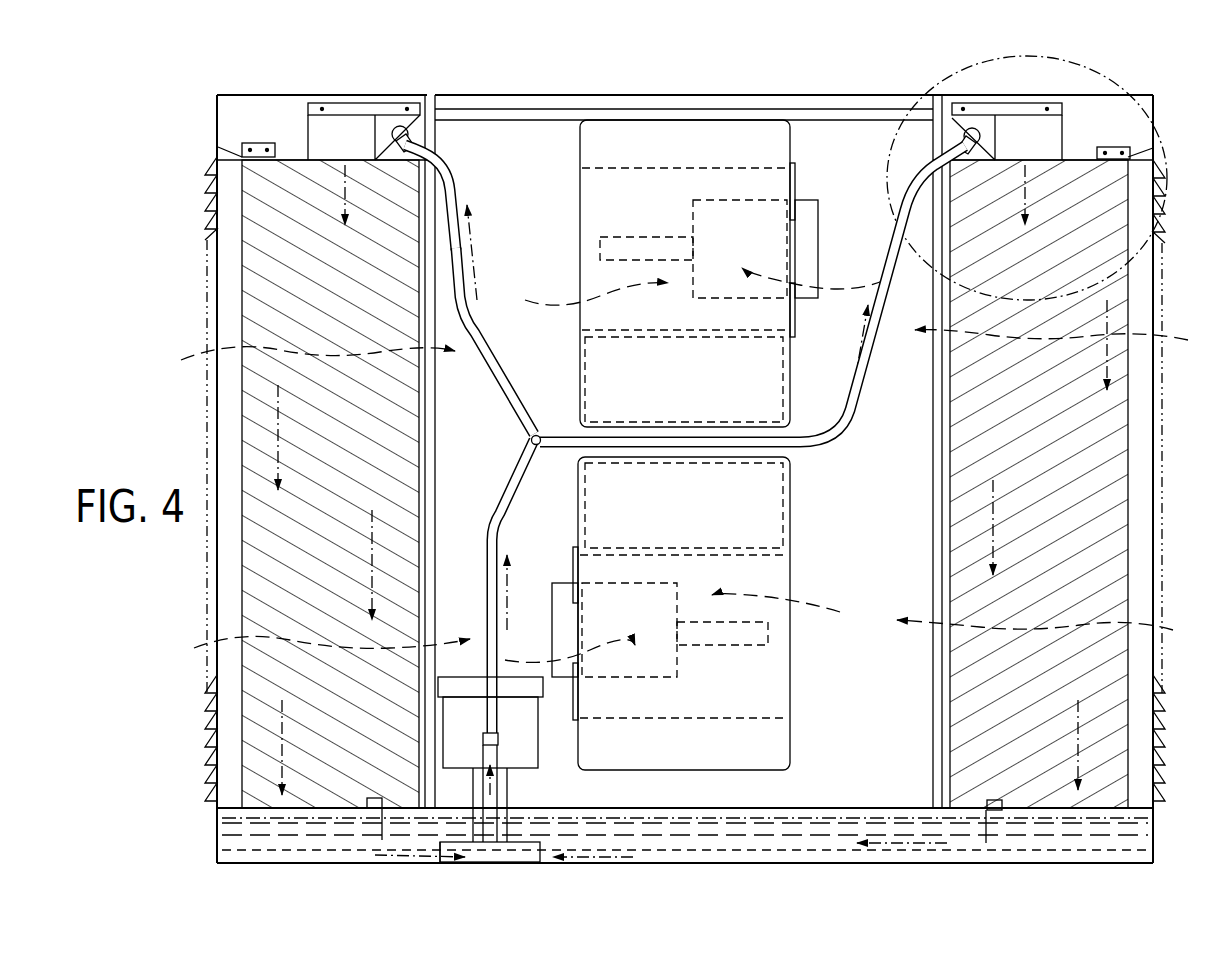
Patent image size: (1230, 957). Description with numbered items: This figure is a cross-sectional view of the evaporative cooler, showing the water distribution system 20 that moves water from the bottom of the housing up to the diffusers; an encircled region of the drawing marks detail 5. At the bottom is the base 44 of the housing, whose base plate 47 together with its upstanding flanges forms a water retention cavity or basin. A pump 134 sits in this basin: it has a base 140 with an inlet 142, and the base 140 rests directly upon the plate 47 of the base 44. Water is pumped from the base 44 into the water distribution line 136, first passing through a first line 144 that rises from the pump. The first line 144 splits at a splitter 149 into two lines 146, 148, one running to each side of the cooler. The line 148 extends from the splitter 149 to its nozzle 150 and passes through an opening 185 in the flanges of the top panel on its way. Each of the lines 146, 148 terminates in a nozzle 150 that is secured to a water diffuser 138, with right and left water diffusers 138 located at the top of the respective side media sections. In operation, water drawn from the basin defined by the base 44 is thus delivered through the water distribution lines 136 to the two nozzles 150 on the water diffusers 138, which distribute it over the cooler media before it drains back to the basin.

The detail region of FIG. 5 is at (1150, 68).
The water distribution system 20 is at (478, 873).
The base 44 is at (870, 872).
The base plate 47 is at (688, 866).
The pump 134 is at (535, 766).
The water distribution line 136 is at (508, 582).
The water diffuser 138 is at (346, 125).
The base 140 is at (530, 858).
The inlet 142 is at (440, 855).
The first line 144 is at (498, 525).
The line 146 is at (512, 335).
The line 148 is at (830, 447).
The splitter 149 is at (538, 435).
The nozzle 150 is at (408, 138).
The opening 185 is at (443, 153).